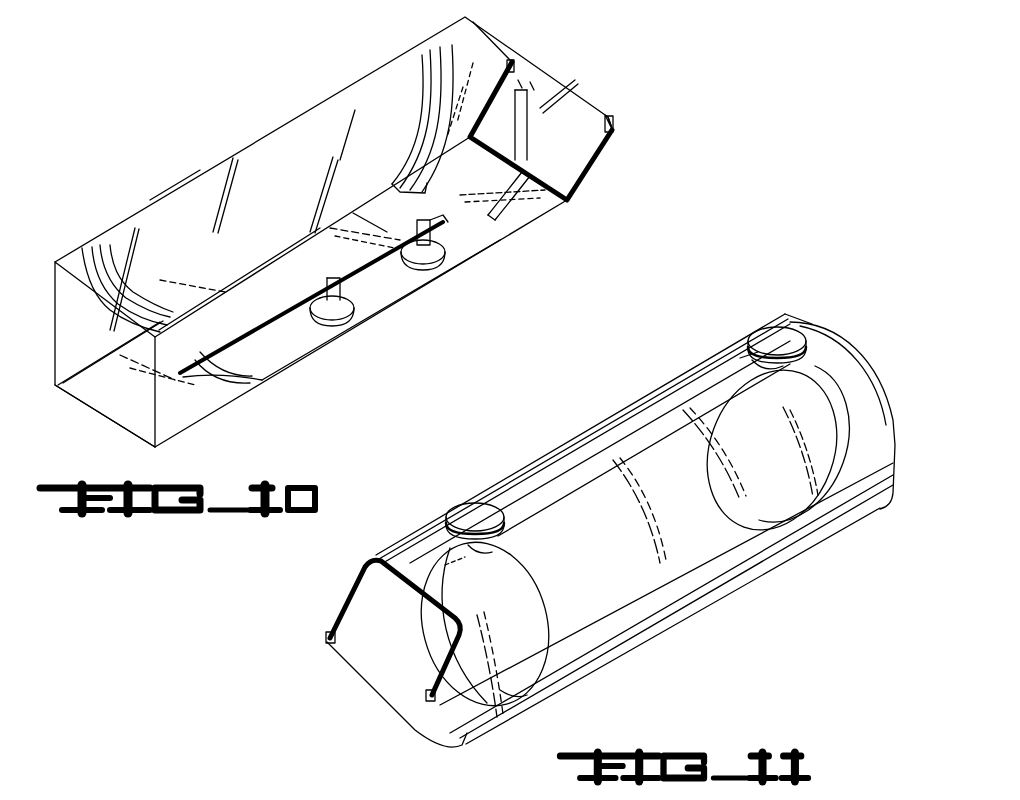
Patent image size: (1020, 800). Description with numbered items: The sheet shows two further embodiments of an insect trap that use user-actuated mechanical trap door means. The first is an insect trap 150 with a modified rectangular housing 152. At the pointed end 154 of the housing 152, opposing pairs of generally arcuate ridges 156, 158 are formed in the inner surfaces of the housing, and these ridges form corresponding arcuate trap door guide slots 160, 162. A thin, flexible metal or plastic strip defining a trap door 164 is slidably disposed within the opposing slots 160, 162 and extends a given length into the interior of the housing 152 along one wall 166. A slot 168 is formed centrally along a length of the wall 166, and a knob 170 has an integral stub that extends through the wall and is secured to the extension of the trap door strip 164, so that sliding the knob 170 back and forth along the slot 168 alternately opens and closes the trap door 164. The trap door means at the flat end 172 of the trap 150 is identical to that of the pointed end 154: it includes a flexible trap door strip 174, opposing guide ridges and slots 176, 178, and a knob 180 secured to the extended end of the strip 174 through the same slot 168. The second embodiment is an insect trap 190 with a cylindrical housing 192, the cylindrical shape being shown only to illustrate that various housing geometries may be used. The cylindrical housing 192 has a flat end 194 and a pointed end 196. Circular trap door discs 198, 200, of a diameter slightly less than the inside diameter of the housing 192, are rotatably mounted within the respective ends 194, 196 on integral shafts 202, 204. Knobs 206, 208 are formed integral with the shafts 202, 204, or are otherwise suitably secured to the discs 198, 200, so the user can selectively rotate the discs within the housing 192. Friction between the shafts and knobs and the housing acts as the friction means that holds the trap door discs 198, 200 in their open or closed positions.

In FIG. 10, the insect trap 150 is at (262, 123).
In FIG. 10, the housing 152 is at (204, 170).
In FIG. 10, the pointed end 154 is at (602, 104).
In FIG. 10, the arcuate ridge 156 is at (430, 83).
In FIG. 10, the arcuate ridge 158 is at (543, 108).
In FIG. 10, the trap door guide slot 160 is at (430, 128).
In FIG. 10, the trap door guide slot 162 is at (497, 228).
In FIG. 10, the trap door 164 is at (505, 146).
In FIG. 10, the wall 166 is at (415, 277).
In FIG. 10, the slot 168 is at (375, 262).
In FIG. 10, the knob 170 is at (430, 262).
In FIG. 10, the flat end 172 is at (112, 416).
In FIG. 10, the trap door strip 174 is at (232, 296).
In FIG. 10, the guide ridges and slots 176 is at (92, 306).
In FIG. 10, the guide ridges and slots 178 is at (215, 386).
In FIG. 10, the knob 180 is at (340, 312).
In FIG. 11, the insect trap 190 is at (611, 400).
In FIG. 11, the housing 192 is at (600, 425).
In FIG. 11, the flat end 194 is at (835, 327).
In FIG. 11, the pointed end 196 is at (350, 673).
In FIG. 11, the trap door disc 198 is at (790, 492).
In FIG. 11, the trap door disc 200 is at (512, 693).
In FIG. 11, the shaft 202 is at (740, 359).
In FIG. 11, the shaft 204 is at (485, 551).
In FIG. 11, the knob 206 is at (768, 327).
In FIG. 11, the knob 208 is at (470, 513).